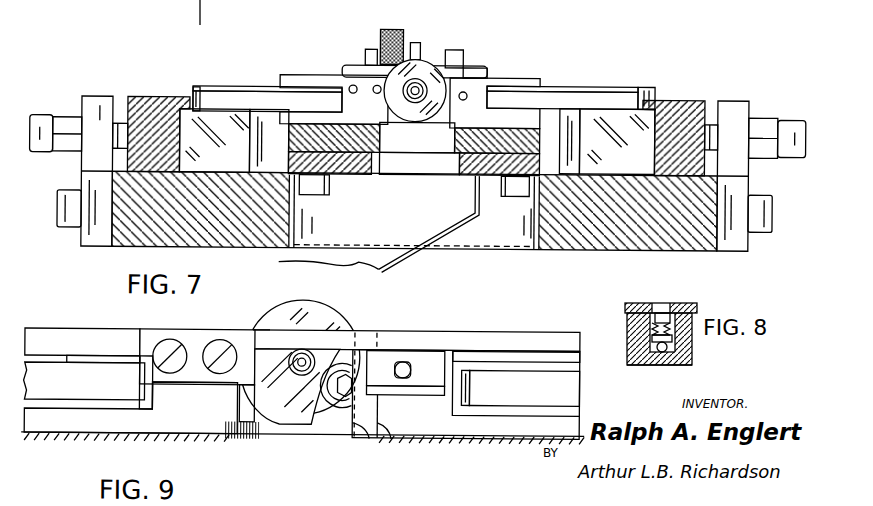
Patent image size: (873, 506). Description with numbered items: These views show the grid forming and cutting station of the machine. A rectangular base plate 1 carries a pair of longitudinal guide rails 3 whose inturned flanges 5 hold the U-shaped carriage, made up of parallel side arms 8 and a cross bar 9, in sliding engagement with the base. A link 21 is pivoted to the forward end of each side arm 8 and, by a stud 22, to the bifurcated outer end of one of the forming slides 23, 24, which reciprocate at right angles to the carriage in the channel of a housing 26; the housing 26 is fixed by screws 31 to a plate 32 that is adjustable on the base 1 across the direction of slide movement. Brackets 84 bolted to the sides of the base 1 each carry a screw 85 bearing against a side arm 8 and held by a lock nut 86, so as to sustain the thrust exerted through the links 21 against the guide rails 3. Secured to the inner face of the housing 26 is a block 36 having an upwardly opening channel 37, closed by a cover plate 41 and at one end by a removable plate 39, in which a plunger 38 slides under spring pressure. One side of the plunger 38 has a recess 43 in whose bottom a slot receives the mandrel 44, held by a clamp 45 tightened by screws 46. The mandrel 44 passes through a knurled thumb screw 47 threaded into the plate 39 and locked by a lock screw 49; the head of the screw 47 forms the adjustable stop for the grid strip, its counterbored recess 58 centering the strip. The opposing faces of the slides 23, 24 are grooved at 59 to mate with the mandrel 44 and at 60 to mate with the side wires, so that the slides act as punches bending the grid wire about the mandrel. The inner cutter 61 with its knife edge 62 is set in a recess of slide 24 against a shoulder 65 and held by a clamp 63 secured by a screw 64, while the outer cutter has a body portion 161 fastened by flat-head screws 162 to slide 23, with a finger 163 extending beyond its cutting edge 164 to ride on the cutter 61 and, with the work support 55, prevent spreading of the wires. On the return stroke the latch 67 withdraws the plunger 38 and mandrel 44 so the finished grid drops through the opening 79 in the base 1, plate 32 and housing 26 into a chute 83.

In FIG. 7, the base plate 1 is at (592, 248).
In FIG. 7, the guide rails 3 is at (158, 96).
In FIG. 7, the inturned flanges 5 is at (193, 92).
In FIG. 7, the side arms 8 is at (200, 115).
In FIG. 7, the cross bar 9 is at (568, 120).
In FIG. 7, the link 21 is at (237, 88).
In FIG. 9, the link 21 is at (58, 367).
In FIG. 7, the stud 22 is at (296, 85).
In FIG. 9, the stud 22 is at (78, 352).
In FIG. 7, the forming slide 23 is at (350, 74).
In FIG. 9, the forming slide 23 is at (118, 332).
In FIG. 7, the forming slide 24 is at (497, 75).
In FIG. 9, the forming slide 24 is at (545, 346).
In FIG. 7, the housing 26 is at (499, 180).
In FIG. 9, the housing 26 is at (437, 434).
In FIG. 7, the screws 31 is at (322, 193).
In FIG. 7, the plate 32 is at (362, 173).
In FIG. 8, the block 36 is at (656, 365).
In FIG. 8, the channel 37 is at (632, 330).
In FIG. 8, the plunger 38 is at (632, 350).
In FIG. 7, the removable plate 39 is at (470, 72).
In FIG. 9, the removable plate 39 is at (270, 422).
In FIG. 7, the cover plate 41 is at (371, 47).
In FIG. 8, the cover plate 41 is at (690, 305).
In FIG. 8, the recess 43 is at (662, 305).
In FIG. 7, the mandrel 44 is at (413, 101).
In FIG. 9, the mandrel 44 is at (306, 352).
In FIG. 8, the mandrel 44 is at (655, 315).
In FIG. 8, the clamp 45 is at (667, 352).
In FIG. 8, the screws 46 is at (690, 345).
In FIG. 7, the thumb screw 47 is at (428, 62).
In FIG. 9, the thumb screw 47 is at (348, 318).
In FIG. 7, the lock screw 49 is at (390, 27).
In FIG. 7, the work support 55 is at (424, 94).
In FIG. 9, the recess 58 is at (285, 345).
In FIG. 7, the groove 59 is at (352, 63).
In FIG. 7, the grooves 60 is at (447, 47).
In FIG. 9, the inner cutter 61 is at (379, 410).
In FIG. 9, the knife edge 62 is at (375, 438).
In FIG. 9, the clamp 63 is at (422, 358).
In FIG. 9, the screw 64 is at (404, 358).
In FIG. 7, the shoulder 65 is at (464, 98).
In FIG. 9, the shoulder 65 is at (388, 438).
In FIG. 7, the latch 67 is at (415, 40).
In FIG. 7, the opening 79 is at (443, 165).
In FIG. 9, the opening 79 is at (330, 440).
In FIG. 7, the chute 83 is at (397, 266).
In FIG. 7, the brackets 84 is at (87, 95).
In FIG. 7, the screw 85 is at (120, 123).
In FIG. 7, the lock nut 86 is at (68, 115).
In FIG. 9, the body portion 161 is at (193, 338).
In FIG. 9, the flat-head screws 162 is at (188, 383).
In FIG. 9, the finger 163 is at (268, 330).
In FIG. 9, the cutting edge 164 is at (229, 416).